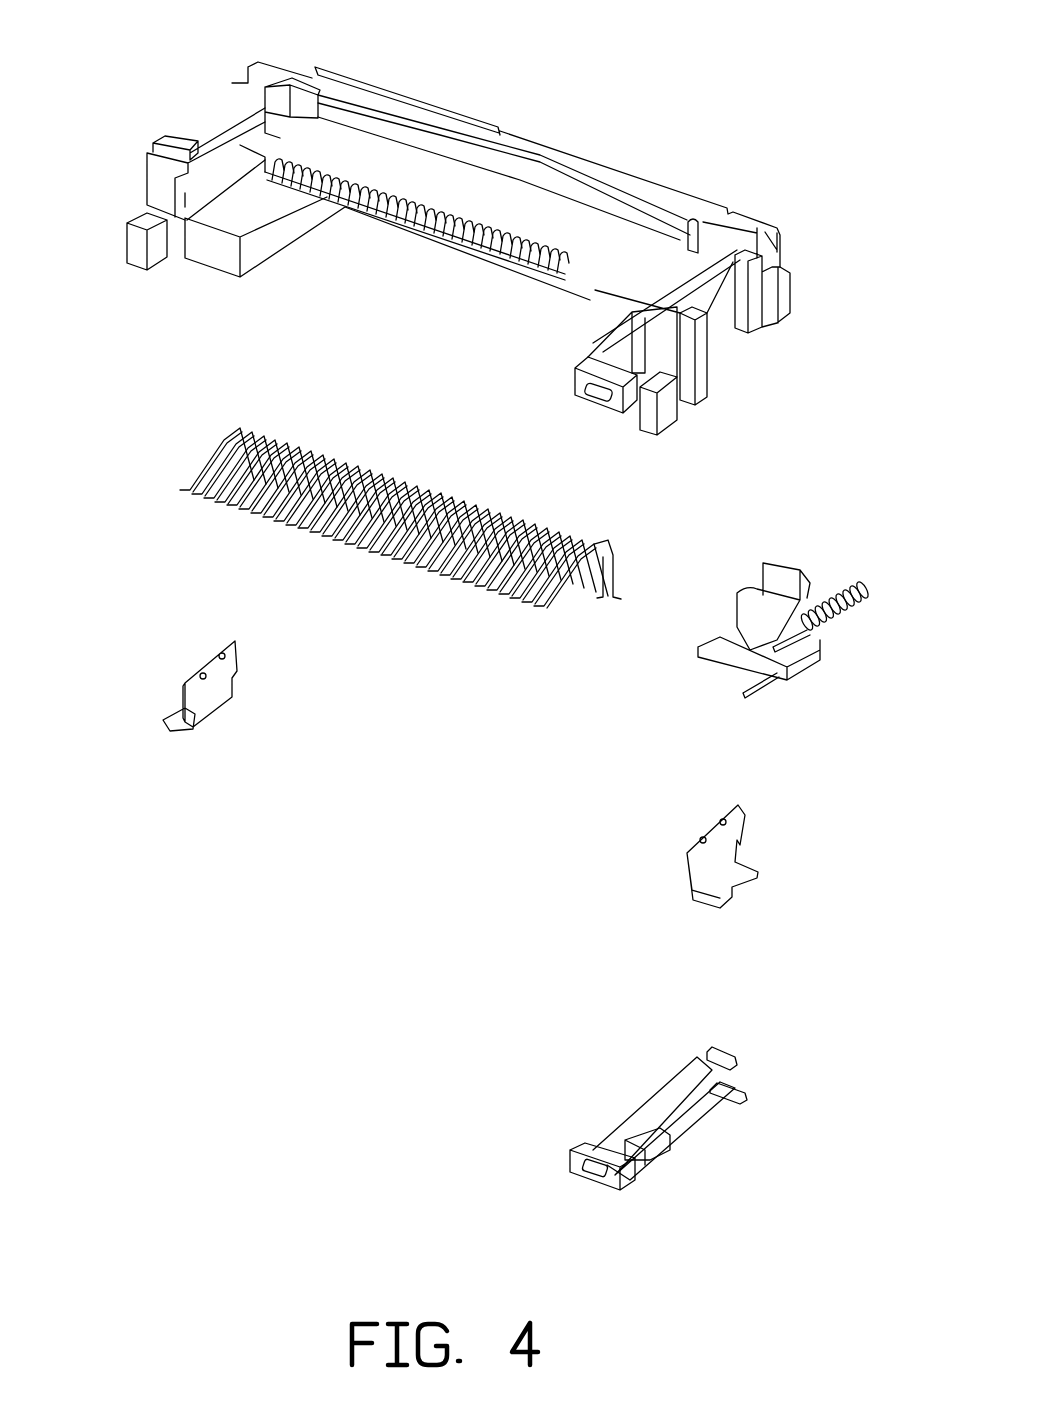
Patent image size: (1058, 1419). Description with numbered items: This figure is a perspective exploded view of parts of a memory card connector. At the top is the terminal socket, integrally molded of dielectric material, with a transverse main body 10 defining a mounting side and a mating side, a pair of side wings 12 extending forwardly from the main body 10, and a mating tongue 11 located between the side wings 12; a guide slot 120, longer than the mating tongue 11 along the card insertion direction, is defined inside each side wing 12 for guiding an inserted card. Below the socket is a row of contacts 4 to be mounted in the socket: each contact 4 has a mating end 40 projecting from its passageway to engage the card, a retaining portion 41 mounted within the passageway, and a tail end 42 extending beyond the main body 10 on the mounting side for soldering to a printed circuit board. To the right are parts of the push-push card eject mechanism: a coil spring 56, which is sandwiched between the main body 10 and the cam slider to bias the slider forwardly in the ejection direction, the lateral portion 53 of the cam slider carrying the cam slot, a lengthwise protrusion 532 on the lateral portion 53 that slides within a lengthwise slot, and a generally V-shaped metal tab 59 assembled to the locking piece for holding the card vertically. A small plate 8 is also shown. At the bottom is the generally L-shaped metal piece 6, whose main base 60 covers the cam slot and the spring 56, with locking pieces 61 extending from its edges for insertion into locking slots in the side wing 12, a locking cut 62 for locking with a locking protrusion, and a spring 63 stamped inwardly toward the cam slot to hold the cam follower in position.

The transverse main body 10 is at (414, 239).
The mating tongue 11 is at (435, 175).
The side wing 12 is at (703, 262).
The guide slot 120 is at (185, 196).
The contact 4 is at (402, 543).
The mating end 40 is at (548, 610).
The retaining portion 41 is at (583, 545).
The tail end 42 is at (612, 560).
The coil spring 56 is at (847, 583).
The V-shaped metal tab 59 is at (737, 627).
The lateral portion 53 is at (807, 653).
The lengthwise protrusion 532 is at (787, 667).
The shielding plate 8 is at (748, 878).
The L-shaped metal piece 6 is at (639, 1103).
The main base 60 is at (652, 1120).
The locking piece 61 is at (717, 1047).
The locking cut 62 is at (593, 1163).
The spring 63 is at (637, 1160).